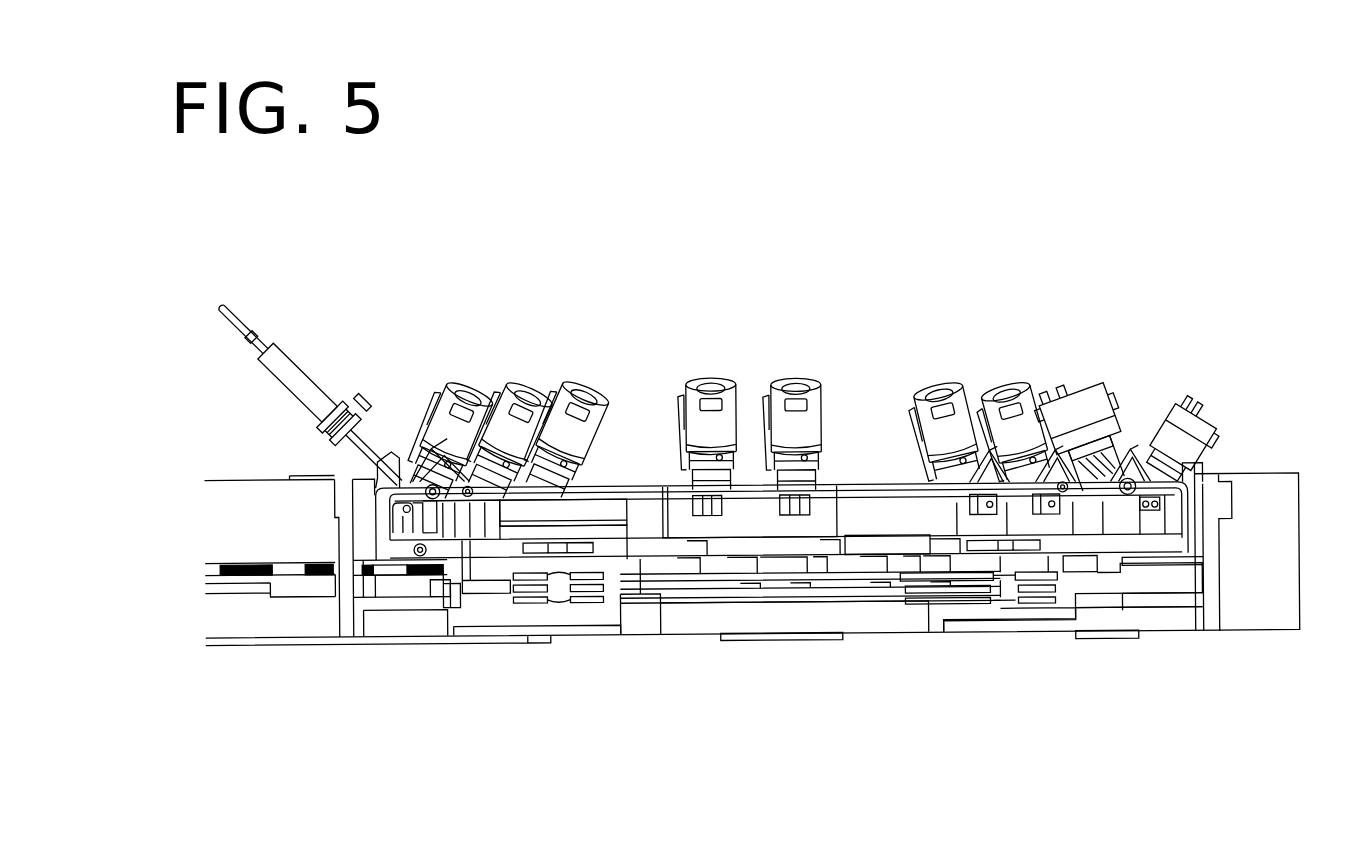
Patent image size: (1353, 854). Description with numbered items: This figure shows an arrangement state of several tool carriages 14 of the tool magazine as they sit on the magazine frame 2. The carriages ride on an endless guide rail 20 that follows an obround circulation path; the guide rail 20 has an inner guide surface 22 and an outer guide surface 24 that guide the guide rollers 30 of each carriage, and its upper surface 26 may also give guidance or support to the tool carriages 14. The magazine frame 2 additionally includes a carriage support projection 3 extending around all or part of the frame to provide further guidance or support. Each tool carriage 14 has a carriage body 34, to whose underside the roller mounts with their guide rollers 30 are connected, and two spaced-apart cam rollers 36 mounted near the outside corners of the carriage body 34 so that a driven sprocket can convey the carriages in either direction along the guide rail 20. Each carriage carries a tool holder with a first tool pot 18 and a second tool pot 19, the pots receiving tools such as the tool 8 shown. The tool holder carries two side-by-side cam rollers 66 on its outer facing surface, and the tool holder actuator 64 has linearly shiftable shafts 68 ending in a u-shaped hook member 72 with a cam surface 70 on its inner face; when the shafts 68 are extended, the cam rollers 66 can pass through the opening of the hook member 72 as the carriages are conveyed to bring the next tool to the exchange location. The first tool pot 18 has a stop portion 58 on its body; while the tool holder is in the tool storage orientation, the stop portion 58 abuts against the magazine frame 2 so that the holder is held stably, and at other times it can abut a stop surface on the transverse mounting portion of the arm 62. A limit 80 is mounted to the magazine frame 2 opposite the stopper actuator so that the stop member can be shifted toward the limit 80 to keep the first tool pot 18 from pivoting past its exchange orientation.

The magazine frame 2 is at (1223, 507).
The carriage support projection 3 is at (452, 574).
The pipette rod 8 is at (230, 317).
The tool carriage 14 is at (533, 568).
The first tool pot 18 is at (1192, 429).
The second tool pot 19 is at (803, 390).
The guide rail 20 is at (1007, 603).
The inner guide surface 22 is at (1000, 605).
The outer guide surface 24 is at (1017, 603).
The upper surface 26 is at (560, 567).
The guide roller 30 is at (793, 593).
The carriage body 34 is at (897, 551).
The cam roller 36 is at (1078, 573).
The stop portion 58 is at (1207, 470).
The arm 62 is at (382, 478).
The tool holder actuator 64 is at (607, 509).
The cam roller 66 is at (787, 519).
The linearly shiftable shaft 68 is at (463, 546).
The cam surface 70 is at (407, 528).
The u-shaped hook member 72 is at (395, 521).
The limit 80 is at (340, 489).